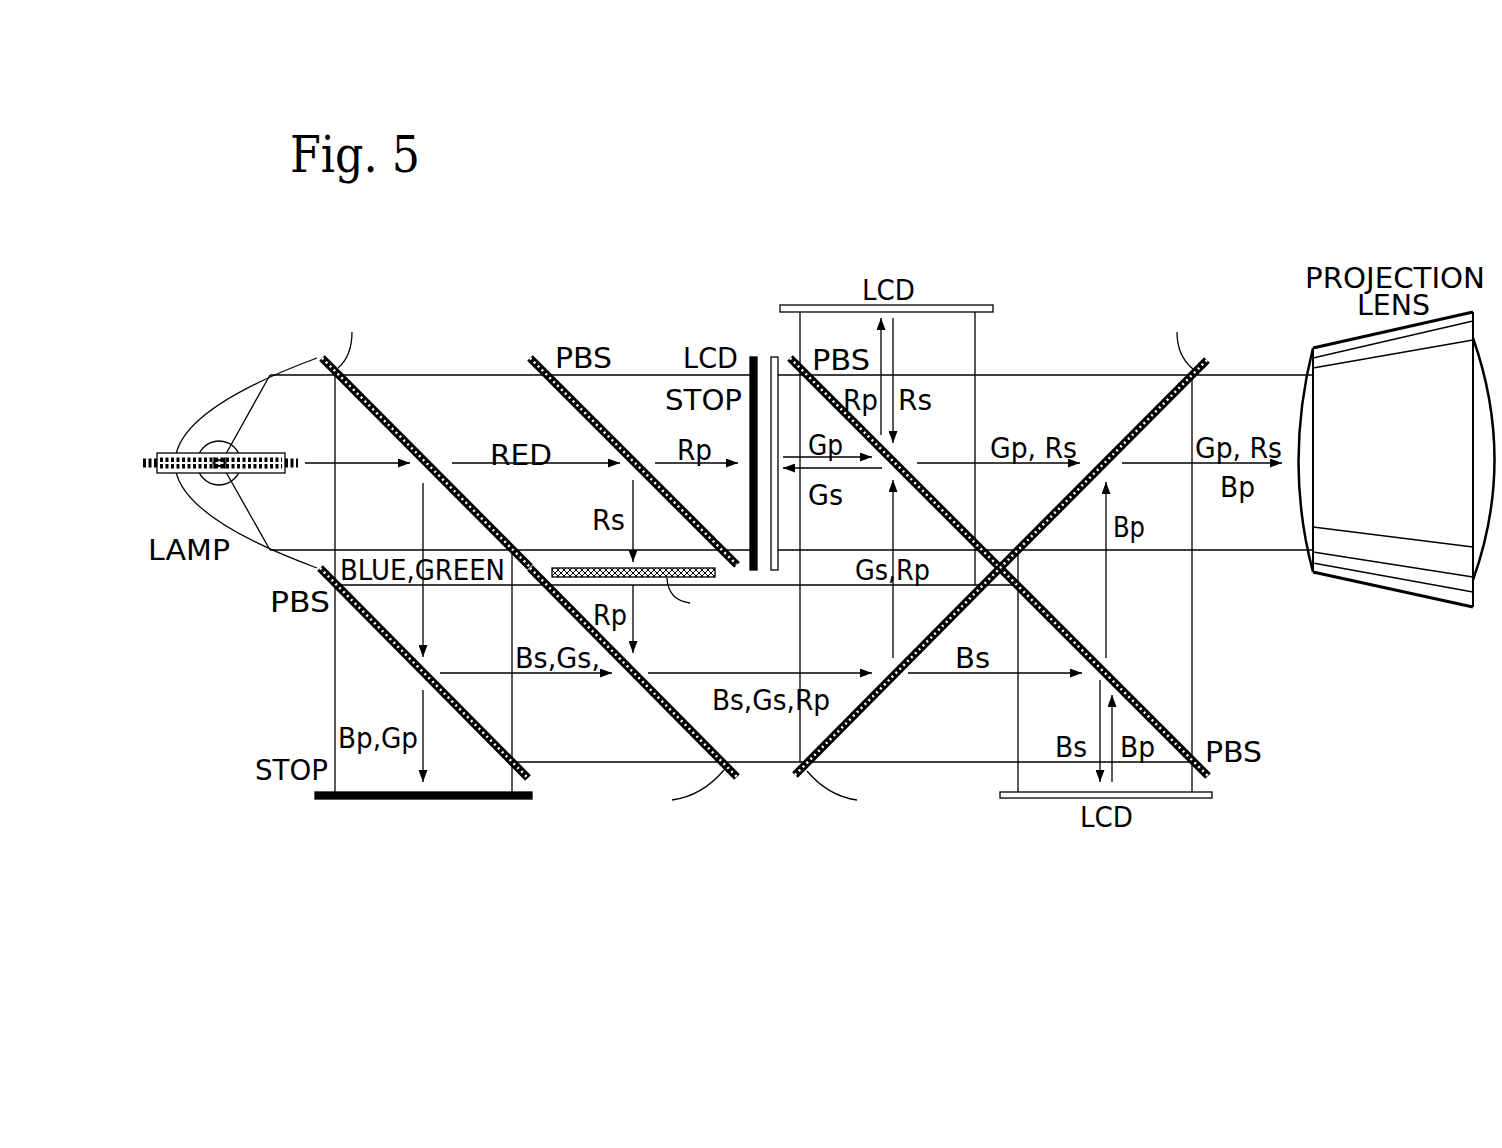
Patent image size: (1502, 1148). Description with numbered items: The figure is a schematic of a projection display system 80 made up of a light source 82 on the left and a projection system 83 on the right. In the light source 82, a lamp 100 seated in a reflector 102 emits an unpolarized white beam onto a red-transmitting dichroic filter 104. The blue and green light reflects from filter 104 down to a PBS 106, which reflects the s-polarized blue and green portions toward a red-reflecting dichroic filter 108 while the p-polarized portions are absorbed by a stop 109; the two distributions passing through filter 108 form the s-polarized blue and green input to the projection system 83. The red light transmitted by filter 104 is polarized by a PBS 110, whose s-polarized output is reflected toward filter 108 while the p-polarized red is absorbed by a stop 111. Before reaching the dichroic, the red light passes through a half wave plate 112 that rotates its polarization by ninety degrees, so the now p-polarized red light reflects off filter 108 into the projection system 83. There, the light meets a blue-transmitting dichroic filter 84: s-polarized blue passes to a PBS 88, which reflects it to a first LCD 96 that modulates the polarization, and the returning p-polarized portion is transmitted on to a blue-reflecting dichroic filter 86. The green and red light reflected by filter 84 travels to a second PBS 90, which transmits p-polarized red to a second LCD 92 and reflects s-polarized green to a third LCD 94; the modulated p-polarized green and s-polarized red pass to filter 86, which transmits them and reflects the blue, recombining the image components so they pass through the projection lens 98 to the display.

The projection display system 80 is at (1250, 196).
The light source 82 is at (268, 831).
The projection system 83 is at (1307, 831).
The blue-transmitting dichroic filter 84 is at (879, 694).
The blue-reflecting dichroic filter 86 is at (1134, 433).
The polarizing beam splitter 88 is at (1136, 702).
The second polarizing beam splitter 90 is at (952, 496).
The second LCD 92 is at (982, 303).
The third LCD 94 is at (779, 535).
The first LCD light valve 96 is at (1180, 800).
The projection lens 98 is at (1410, 594).
The lamp 100 is at (253, 472).
The reflector 102 is at (318, 358).
The red-transmitting dichroic filter 104 is at (404, 437).
The PBS 106 is at (381, 632).
The red-reflecting dichroic filter 108 is at (650, 692).
The stop 109 is at (435, 800).
The PBS 110 is at (611, 438).
The stop 111 is at (749, 528).
The half wave plate 112 is at (572, 568).